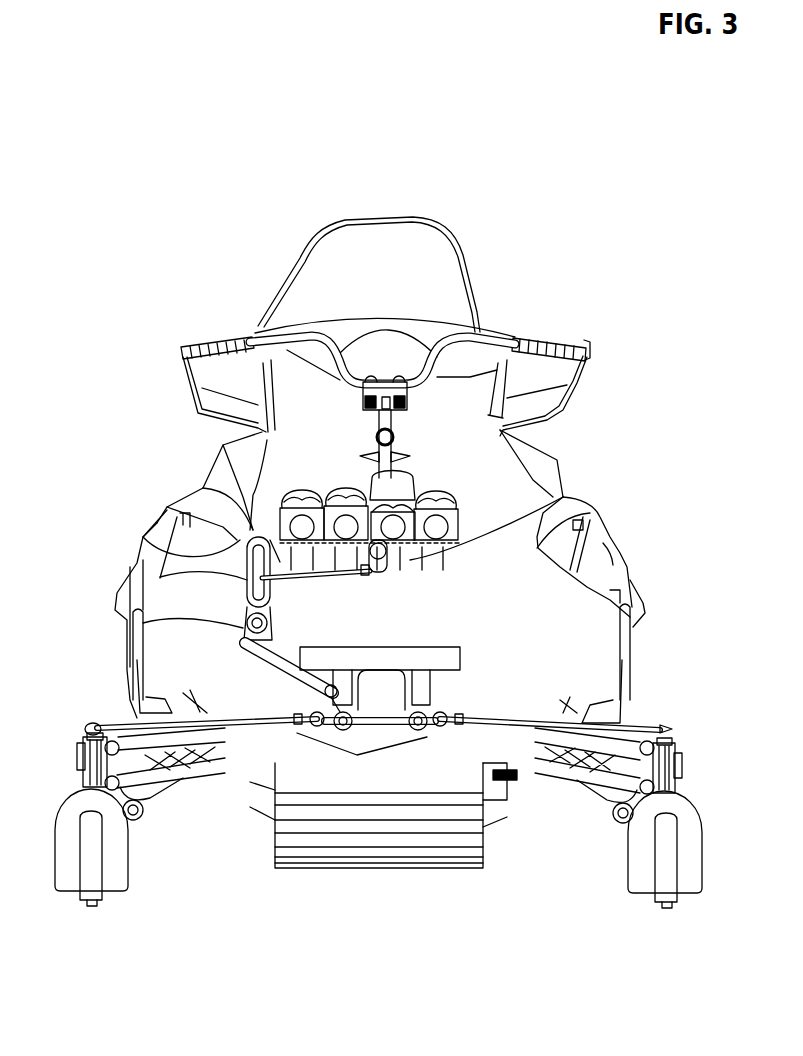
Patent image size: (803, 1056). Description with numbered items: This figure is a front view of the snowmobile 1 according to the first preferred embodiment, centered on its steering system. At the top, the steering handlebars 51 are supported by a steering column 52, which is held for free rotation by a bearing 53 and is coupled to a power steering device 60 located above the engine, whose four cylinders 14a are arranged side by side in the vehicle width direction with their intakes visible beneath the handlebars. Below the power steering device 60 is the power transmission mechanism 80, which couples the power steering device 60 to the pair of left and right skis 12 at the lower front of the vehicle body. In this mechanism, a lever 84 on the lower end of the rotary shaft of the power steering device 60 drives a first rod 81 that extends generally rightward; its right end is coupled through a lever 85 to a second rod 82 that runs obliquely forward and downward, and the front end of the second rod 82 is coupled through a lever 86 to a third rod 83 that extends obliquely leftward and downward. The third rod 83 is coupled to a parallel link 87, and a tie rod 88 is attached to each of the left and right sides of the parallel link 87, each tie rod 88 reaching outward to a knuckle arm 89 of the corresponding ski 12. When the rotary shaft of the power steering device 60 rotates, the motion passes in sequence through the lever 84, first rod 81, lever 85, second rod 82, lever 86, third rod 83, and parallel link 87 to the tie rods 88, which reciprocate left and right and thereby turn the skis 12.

The snowmobile 1 is at (214, 238).
The steering handlebars 51 is at (470, 330).
The steering column 52 is at (405, 420).
The bearing 53 is at (402, 437).
The power steering device 60 is at (408, 473).
The cylinders 14a is at (373, 472).
The power transmission mechanism 80 is at (282, 616).
The first rod 81 is at (290, 492).
The second rod 82 is at (147, 533).
The third rod 83 is at (283, 665).
The lever 84 is at (563, 500).
The lever 85 is at (203, 487).
The lever 86 is at (245, 627).
The parallel link 87 is at (380, 722).
The tie rod 88 is at (178, 737).
The knuckle arm 89 is at (93, 726).
The skis 12 is at (130, 880).